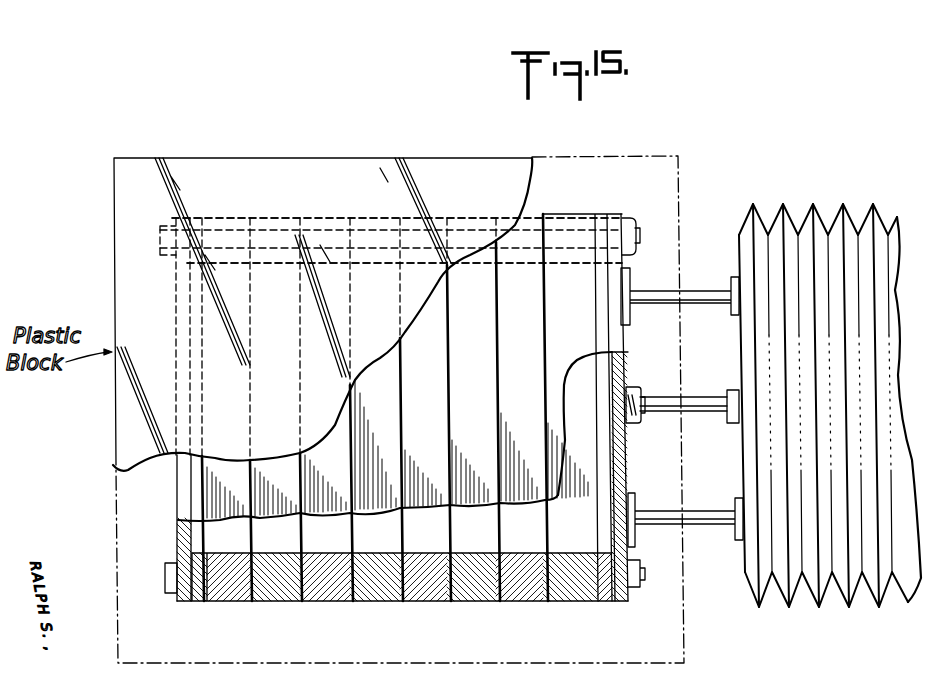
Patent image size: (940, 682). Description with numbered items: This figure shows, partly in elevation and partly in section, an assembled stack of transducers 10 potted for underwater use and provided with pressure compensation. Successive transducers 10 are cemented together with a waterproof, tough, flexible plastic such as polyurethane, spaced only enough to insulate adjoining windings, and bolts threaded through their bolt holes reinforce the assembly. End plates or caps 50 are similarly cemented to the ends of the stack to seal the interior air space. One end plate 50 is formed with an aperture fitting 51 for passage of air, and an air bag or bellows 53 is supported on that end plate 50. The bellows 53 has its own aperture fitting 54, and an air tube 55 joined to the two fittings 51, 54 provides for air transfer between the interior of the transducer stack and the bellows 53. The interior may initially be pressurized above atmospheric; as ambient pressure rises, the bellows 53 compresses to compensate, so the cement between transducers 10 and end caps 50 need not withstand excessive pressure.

The transducer 10 is at (216, 216).
The end plate 50 is at (180, 524).
The aperture fitting 51 is at (638, 393).
The air bag or bellows 53 is at (812, 212).
The aperture fitting 54 is at (734, 427).
The air tube 55 is at (700, 403).